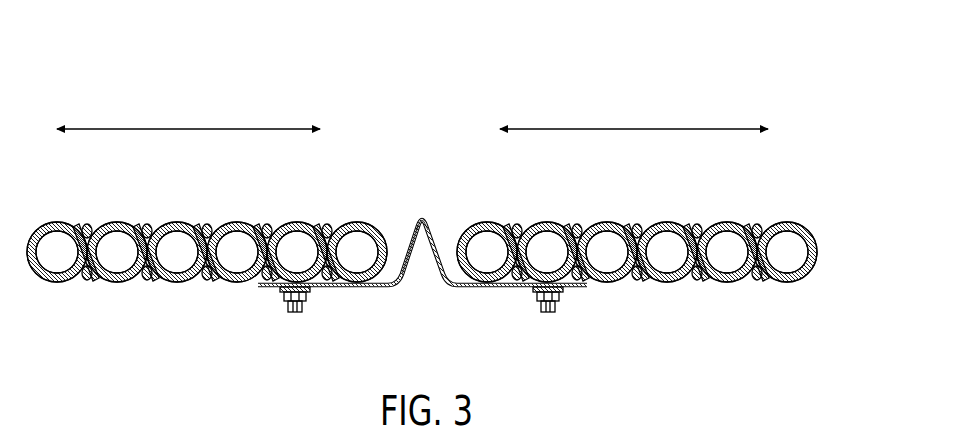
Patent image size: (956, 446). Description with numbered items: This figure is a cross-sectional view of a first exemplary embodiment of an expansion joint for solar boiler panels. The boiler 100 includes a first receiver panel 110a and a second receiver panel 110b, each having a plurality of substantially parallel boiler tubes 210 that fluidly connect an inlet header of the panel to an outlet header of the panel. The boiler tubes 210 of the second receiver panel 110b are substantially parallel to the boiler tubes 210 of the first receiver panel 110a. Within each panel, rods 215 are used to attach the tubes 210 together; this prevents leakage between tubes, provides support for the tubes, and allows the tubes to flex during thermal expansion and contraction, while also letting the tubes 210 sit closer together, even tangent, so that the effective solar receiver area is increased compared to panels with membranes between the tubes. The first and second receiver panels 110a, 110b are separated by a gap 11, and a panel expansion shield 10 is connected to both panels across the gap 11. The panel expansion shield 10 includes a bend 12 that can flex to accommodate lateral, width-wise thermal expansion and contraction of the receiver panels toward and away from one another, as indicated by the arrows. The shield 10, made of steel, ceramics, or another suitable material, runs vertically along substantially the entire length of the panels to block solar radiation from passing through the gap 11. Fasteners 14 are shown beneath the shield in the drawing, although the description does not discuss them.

The boiler 100 is at (170, 80).
The first receiver panel 110a is at (156, 196).
The second receiver panel 110b is at (794, 201).
The panel expansion shield 10 is at (427, 212).
The gap 11 is at (401, 205).
The bend 12 is at (422, 244).
The fastener bolt 14 is at (299, 315).
The boiler tubes 210 is at (237, 223).
The rods 215 is at (86, 228).